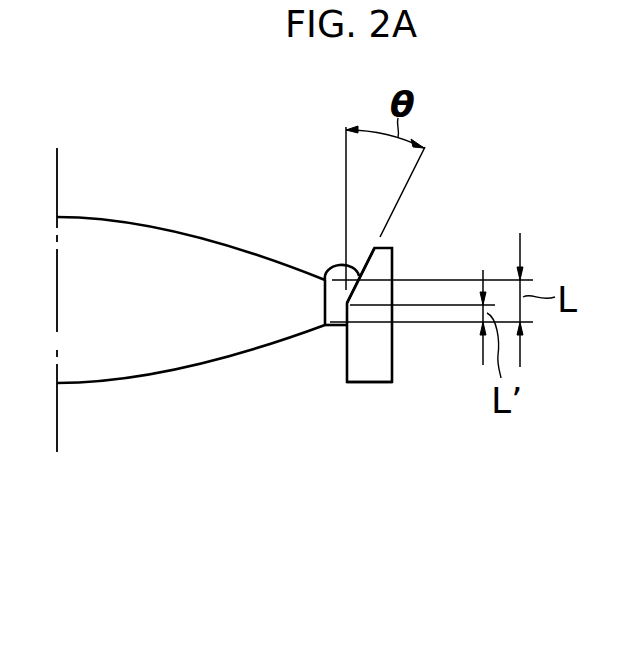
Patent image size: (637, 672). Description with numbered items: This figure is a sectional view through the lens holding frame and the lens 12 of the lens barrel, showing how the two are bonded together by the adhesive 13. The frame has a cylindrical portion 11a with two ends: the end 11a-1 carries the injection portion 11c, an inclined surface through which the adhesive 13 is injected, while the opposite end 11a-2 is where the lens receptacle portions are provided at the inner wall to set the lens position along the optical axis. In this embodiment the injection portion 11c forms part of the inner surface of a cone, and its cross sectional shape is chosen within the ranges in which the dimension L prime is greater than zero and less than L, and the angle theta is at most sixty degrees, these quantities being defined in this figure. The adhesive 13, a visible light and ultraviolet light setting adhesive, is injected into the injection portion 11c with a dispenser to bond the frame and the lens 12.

The lens 12 is at (158, 373).
The adhesive 13 is at (337, 328).
The injection portion 11c is at (364, 263).
The cylindrical portion 11a is at (379, 369).
The end of the cylindrical portion 11a-1 is at (384, 245).
The end of the cylindrical portion 11a-2 is at (367, 383).